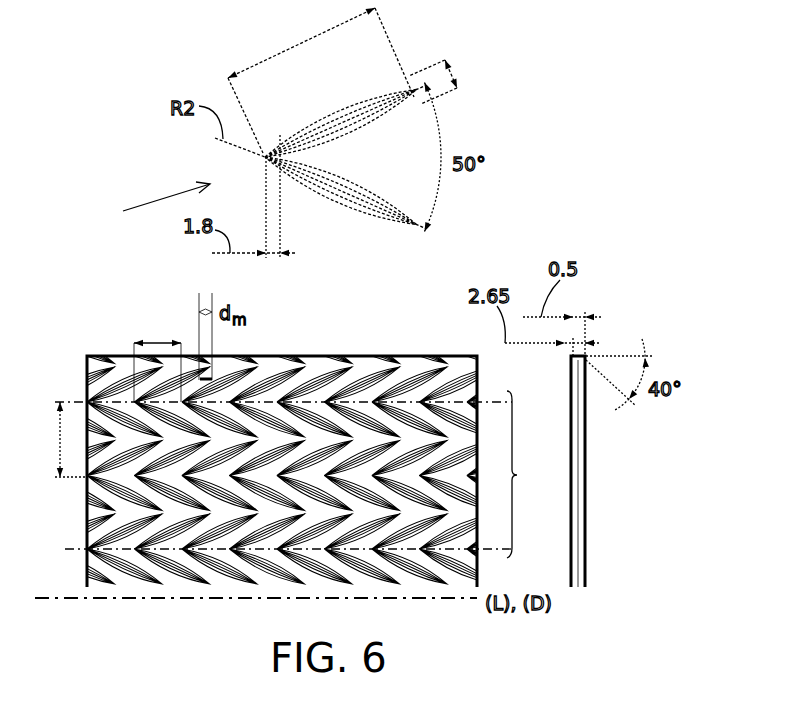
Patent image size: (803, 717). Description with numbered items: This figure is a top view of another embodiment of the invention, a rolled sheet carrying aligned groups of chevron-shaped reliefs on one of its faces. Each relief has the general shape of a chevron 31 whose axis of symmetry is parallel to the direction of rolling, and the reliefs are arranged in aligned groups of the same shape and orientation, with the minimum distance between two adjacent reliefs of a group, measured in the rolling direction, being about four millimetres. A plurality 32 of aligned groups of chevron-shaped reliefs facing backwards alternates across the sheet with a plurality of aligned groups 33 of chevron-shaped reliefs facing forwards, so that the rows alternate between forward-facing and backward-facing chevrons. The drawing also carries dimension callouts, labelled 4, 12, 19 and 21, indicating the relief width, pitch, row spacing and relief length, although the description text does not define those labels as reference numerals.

The groove width 4 is at (456, 76).
The groove pitch 12 is at (155, 343).
The row spacing 19 is at (60, 443).
The groove length 21 is at (307, 42).
The chevron 31 is at (143, 205).
The plurality of aligned groups of reliefs 32 is at (517, 475).
The aligned groups of chevron-shaped reliefs facing forwards 33 is at (86, 490).